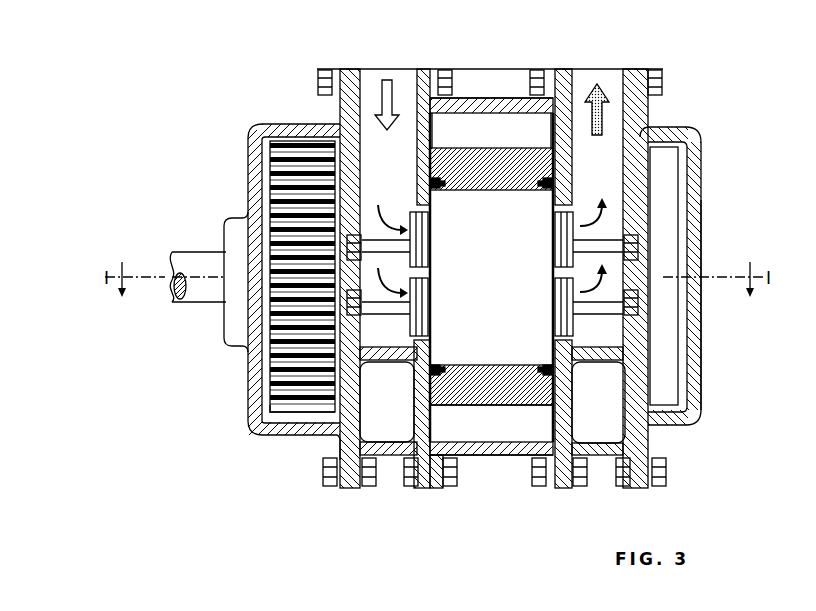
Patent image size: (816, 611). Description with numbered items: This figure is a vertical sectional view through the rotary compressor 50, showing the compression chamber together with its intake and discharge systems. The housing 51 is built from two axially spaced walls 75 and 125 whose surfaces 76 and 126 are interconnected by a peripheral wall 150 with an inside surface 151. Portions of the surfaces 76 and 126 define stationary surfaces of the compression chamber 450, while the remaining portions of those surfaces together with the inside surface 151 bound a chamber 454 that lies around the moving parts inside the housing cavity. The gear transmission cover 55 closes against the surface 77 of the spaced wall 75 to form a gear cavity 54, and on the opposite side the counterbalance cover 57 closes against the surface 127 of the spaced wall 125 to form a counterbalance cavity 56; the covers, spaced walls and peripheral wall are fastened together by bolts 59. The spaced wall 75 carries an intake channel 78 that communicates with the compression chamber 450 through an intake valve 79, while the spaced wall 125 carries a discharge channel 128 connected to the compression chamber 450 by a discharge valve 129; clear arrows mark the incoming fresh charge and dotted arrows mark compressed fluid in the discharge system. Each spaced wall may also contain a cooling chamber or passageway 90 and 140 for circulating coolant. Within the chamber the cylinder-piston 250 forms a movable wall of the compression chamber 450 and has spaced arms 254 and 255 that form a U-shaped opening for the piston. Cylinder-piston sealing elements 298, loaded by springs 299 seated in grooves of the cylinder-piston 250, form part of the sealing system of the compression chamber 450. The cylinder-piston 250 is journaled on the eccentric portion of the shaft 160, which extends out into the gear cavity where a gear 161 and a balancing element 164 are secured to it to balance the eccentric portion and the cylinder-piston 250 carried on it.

The rotary compressor 50 is at (701, 133).
The housing 51 is at (265, 122).
The gear cavity 54 is at (270, 392).
The gear transmission cover 55 is at (258, 360).
The counterbalance cavity 56 is at (690, 180).
The counterbalance cover 57 is at (694, 224).
The bolts 59 is at (323, 78).
The spaced wall 75 is at (345, 70).
The surface of spaced wall 75 76 is at (446, 104).
The surface of spaced wall 75 77 is at (345, 414).
The intake channel 78 is at (400, 176).
The intake valve 79 is at (426, 242).
The cooling chamber or passageway 90 is at (350, 418).
The spaced wall 125 is at (632, 72).
The surface of spaced wall 125 126 is at (560, 446).
The surface of spaced wall 125 127 is at (642, 138).
The discharge channel 128 is at (612, 176).
The discharge valve 129 is at (562, 250).
The cooling chamber or passageway 140 is at (572, 398).
The peripheral wall 150 is at (503, 98).
The inside surface of peripheral wall 151 is at (517, 460).
The shaft 160 is at (200, 262).
The gear 161 is at (278, 414).
The balancing element 164 is at (676, 332).
The cylinder-piston 250 is at (500, 400).
The spaced arm 254 is at (496, 178).
The spaced arm 255 is at (472, 406).
The cylinder-piston sealing elements 298 is at (432, 178).
The springs 299 is at (450, 176).
The compression chamber 450 is at (510, 282).
The chamber 454 is at (541, 125).